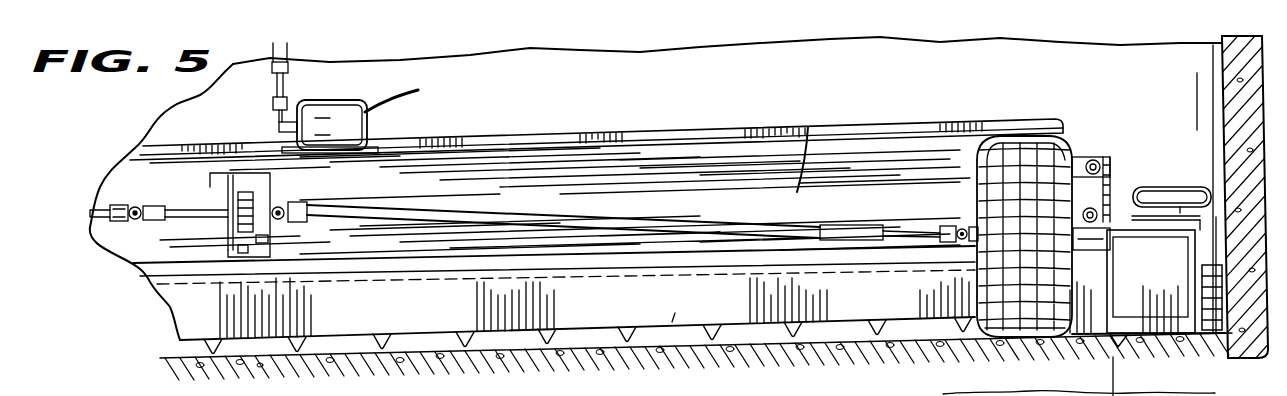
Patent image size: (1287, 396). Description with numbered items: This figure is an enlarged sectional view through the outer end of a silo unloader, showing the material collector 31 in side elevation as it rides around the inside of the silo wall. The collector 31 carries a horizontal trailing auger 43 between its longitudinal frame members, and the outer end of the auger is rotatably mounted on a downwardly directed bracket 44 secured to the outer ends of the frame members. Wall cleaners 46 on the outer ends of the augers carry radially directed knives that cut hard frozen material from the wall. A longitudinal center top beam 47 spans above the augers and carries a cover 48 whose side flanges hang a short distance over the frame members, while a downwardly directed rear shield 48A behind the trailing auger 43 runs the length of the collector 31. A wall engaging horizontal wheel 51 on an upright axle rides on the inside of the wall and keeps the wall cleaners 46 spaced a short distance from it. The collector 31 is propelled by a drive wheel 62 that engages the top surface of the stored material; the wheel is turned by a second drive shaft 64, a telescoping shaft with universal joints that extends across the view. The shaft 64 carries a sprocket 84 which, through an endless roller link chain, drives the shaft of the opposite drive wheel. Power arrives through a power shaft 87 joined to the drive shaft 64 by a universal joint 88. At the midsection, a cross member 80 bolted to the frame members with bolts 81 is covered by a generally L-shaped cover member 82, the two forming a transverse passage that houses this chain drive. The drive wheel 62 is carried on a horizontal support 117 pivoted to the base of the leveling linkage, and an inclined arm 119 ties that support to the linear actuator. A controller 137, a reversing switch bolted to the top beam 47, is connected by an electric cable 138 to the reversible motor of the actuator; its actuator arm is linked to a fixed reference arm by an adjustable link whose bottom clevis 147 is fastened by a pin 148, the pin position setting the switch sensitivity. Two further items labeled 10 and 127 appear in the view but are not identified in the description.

The direction of travel 10 is at (1065, 370).
The material collector 31 is at (670, 121).
The horizontal trailing auger 43 is at (887, 333).
The downwardly directed bracket 44 is at (1187, 253).
The wall cleaners 46 is at (1200, 287).
The longitudinal center top beam 47 is at (852, 130).
The cover 48 is at (808, 127).
The downwardly directed rear shield 48A is at (675, 313).
The wall engaging horizontal wheel 51 is at (1192, 193).
The drive wheel 62 is at (1017, 147).
The second drive shaft 64 is at (469, 199).
The cross member 80 is at (277, 232).
The bolts 81 is at (243, 253).
The L-shaped cover member 82 is at (270, 185).
The sprocket 84 is at (233, 225).
The power shaft 87 is at (93, 192).
The universal joint 88 is at (118, 205).
The second horizontal support 117 is at (1107, 210).
The inclined arm 119 is at (1110, 177).
The upper pivot pin 127 is at (1095, 160).
The controller 137 is at (367, 123).
The electric cable 138 is at (386, 101).
The bottom clevis 147 is at (273, 100).
The pin 148 is at (278, 114).